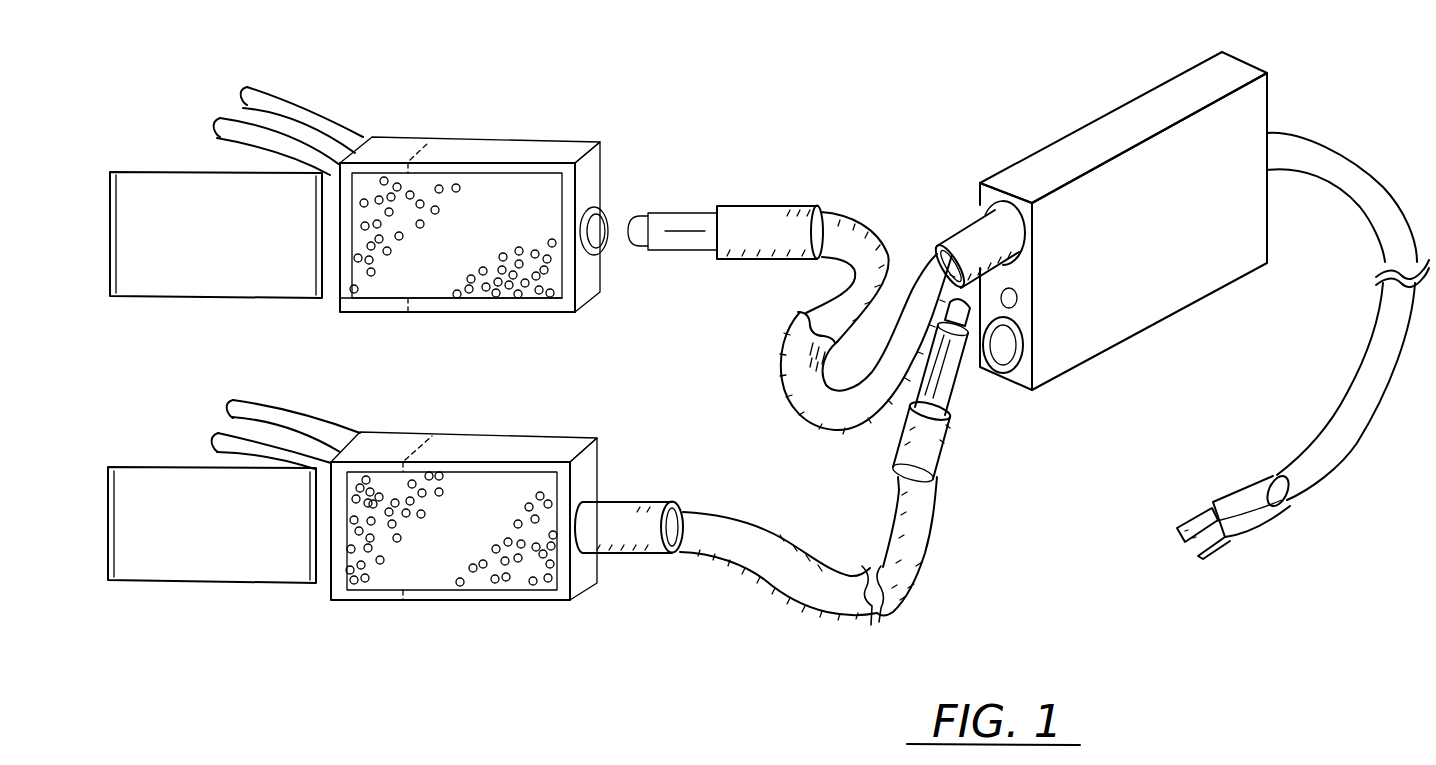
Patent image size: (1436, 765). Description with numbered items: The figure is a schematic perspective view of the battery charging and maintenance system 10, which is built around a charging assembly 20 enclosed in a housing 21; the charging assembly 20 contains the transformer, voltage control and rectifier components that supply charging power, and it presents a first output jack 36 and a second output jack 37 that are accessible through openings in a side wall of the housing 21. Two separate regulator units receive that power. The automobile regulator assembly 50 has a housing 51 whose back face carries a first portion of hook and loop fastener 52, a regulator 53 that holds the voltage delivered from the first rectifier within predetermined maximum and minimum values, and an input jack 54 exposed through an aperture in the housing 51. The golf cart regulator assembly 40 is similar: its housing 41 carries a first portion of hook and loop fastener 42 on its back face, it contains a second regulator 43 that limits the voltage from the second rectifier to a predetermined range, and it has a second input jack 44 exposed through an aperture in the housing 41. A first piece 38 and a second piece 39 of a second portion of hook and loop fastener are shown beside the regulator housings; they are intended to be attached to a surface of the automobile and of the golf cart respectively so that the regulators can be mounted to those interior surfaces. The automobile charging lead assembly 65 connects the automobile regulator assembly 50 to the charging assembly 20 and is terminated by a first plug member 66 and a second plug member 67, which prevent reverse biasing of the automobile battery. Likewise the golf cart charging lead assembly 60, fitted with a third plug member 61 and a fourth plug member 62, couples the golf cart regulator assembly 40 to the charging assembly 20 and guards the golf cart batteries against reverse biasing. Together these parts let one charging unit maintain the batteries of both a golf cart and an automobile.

The battery charging and maintenance system 10 is at (1058, 603).
The charging assembly 20 is at (1063, 135).
The housing 21 is at (1222, 52).
The first output jack 36 is at (1000, 197).
The second output jack 37 is at (1035, 393).
The first piece of second portion of hook and loop fastener 38 is at (160, 180).
The second piece of second portion of hook and loop fastener 39 is at (220, 570).
The golf cart regulator assembly 40 is at (432, 610).
The housing 41 is at (570, 445).
The first portion of hook and loop fastener 42 is at (508, 575).
The second regulator 43 is at (395, 443).
The second input jack 44 is at (580, 585).
The automobile regulator assembly 50 is at (572, 140).
The housing 51 is at (393, 313).
The first portion of hook and loop fastener 52 is at (493, 290).
The regulator 53 is at (392, 147).
The input jack 54 is at (605, 210).
The golf cart charging lead assembly 60 is at (923, 517).
The third plug member 61 is at (938, 450).
The fourth plug member 62 is at (655, 553).
The automobile charging lead assembly 65 is at (852, 215).
The first plug member 66 is at (968, 228).
The second plug member 67 is at (758, 218).